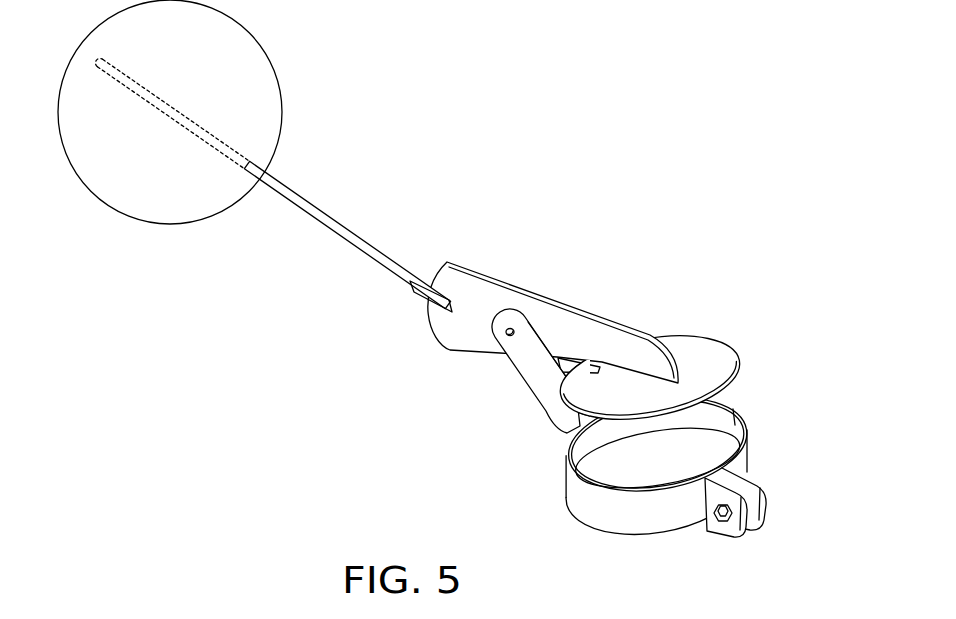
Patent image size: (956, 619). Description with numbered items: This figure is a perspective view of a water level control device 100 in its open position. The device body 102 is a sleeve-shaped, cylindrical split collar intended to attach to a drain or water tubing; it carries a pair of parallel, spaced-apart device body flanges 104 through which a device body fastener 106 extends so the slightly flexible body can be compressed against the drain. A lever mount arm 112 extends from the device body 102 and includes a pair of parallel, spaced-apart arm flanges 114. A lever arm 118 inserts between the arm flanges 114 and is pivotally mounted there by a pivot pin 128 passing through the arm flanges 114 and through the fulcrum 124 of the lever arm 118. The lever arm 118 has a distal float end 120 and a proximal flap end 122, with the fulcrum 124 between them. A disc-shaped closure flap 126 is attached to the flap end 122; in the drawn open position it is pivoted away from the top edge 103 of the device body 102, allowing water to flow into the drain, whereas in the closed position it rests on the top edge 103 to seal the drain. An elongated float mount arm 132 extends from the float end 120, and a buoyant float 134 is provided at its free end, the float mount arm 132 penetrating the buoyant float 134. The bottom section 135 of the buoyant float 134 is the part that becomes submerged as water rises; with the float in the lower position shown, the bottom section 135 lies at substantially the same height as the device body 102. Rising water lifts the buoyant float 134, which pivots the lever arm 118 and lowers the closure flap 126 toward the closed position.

The water level control device 100 is at (462, 166).
The device body 102 is at (627, 520).
The top edge 103 is at (737, 414).
The device body flanges 104 is at (745, 534).
The device body fastener 106 is at (717, 519).
The lever mount arm 112 is at (541, 424).
The arm flanges 114 is at (562, 371).
The lever arm 118 is at (450, 353).
The float end 120 is at (423, 308).
The flap end 122 is at (700, 392).
The fulcrum 124 is at (549, 322).
The closure flap 126 is at (712, 352).
The pivot pin 128 is at (509, 337).
The float mount arm 132 is at (318, 217).
The buoyant float 134 is at (108, 188).
The bottom section 135 is at (168, 200).